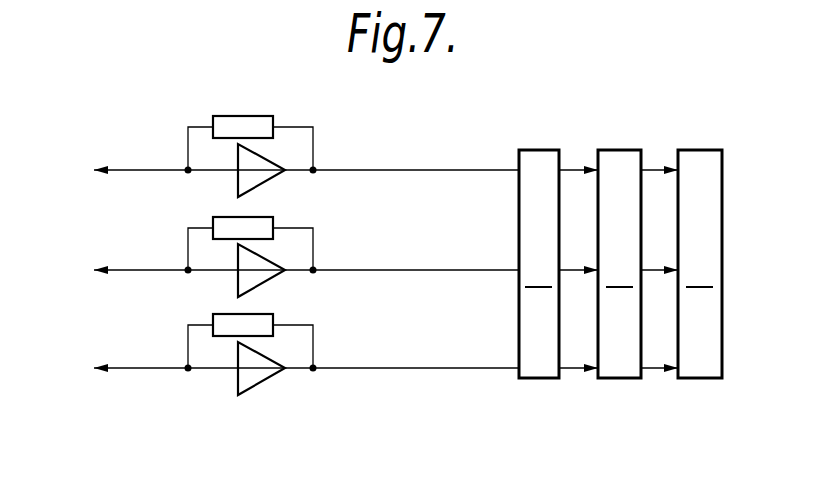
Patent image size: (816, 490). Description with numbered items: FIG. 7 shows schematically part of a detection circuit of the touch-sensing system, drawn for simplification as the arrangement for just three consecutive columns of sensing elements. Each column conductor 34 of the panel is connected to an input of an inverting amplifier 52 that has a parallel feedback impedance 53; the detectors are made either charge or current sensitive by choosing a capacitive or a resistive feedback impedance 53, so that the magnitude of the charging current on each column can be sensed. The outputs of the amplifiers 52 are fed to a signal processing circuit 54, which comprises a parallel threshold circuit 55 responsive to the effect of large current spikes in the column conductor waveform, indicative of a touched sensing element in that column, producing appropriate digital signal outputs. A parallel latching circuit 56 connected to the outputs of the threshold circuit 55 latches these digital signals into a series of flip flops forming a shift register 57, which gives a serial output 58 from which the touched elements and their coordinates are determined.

The column conductor 34 is at (282, 272).
The inverting amplifier 52 is at (268, 176).
The parallel feedback impedance 53 is at (252, 120).
The signal processing circuit 54 is at (577, 145).
The parallel threshold circuit 55 is at (539, 264).
The parallel latching circuit 56 is at (619, 264).
The shift register 57 is at (700, 264).
The serial output 58 is at (695, 148).